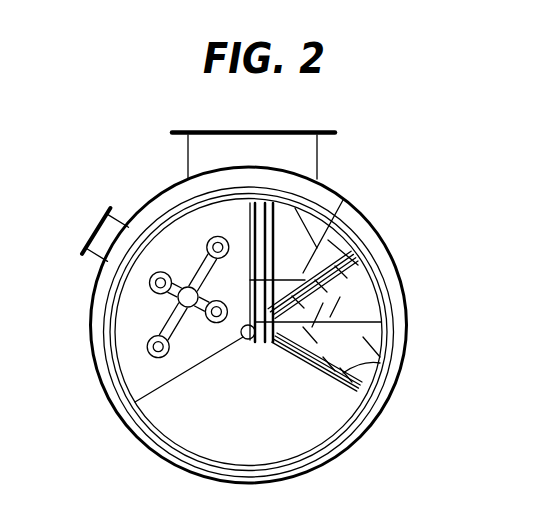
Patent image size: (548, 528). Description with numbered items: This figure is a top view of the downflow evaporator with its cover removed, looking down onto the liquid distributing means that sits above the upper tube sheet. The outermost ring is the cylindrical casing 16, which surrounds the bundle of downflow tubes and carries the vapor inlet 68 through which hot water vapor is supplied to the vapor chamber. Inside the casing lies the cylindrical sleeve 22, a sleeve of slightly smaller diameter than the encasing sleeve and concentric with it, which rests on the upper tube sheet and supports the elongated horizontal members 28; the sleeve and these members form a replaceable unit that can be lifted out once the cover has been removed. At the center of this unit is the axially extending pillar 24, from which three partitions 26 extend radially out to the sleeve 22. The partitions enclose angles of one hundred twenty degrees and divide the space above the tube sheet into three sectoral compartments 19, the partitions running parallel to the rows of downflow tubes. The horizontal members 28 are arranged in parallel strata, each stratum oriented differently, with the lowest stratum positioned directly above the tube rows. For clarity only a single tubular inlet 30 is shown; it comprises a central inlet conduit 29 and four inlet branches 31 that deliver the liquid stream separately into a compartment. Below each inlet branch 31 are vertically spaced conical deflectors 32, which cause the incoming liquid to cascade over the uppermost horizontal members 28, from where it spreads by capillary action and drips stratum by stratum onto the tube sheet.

The cylindrical casing 16 is at (407, 303).
The sectoral compartment 19 is at (300, 443).
The cylindrical sleeve 22 is at (180, 452).
The pillar 24 is at (246, 341).
The partition 26 is at (248, 307).
The horizontal member 28 is at (283, 233).
The central inlet conduit 29 is at (200, 295).
The tubular inlet 30 is at (170, 323).
The inlet branch 31 is at (207, 267).
The conical deflector 32 is at (237, 220).
The vapor inlet 68 is at (205, 152).